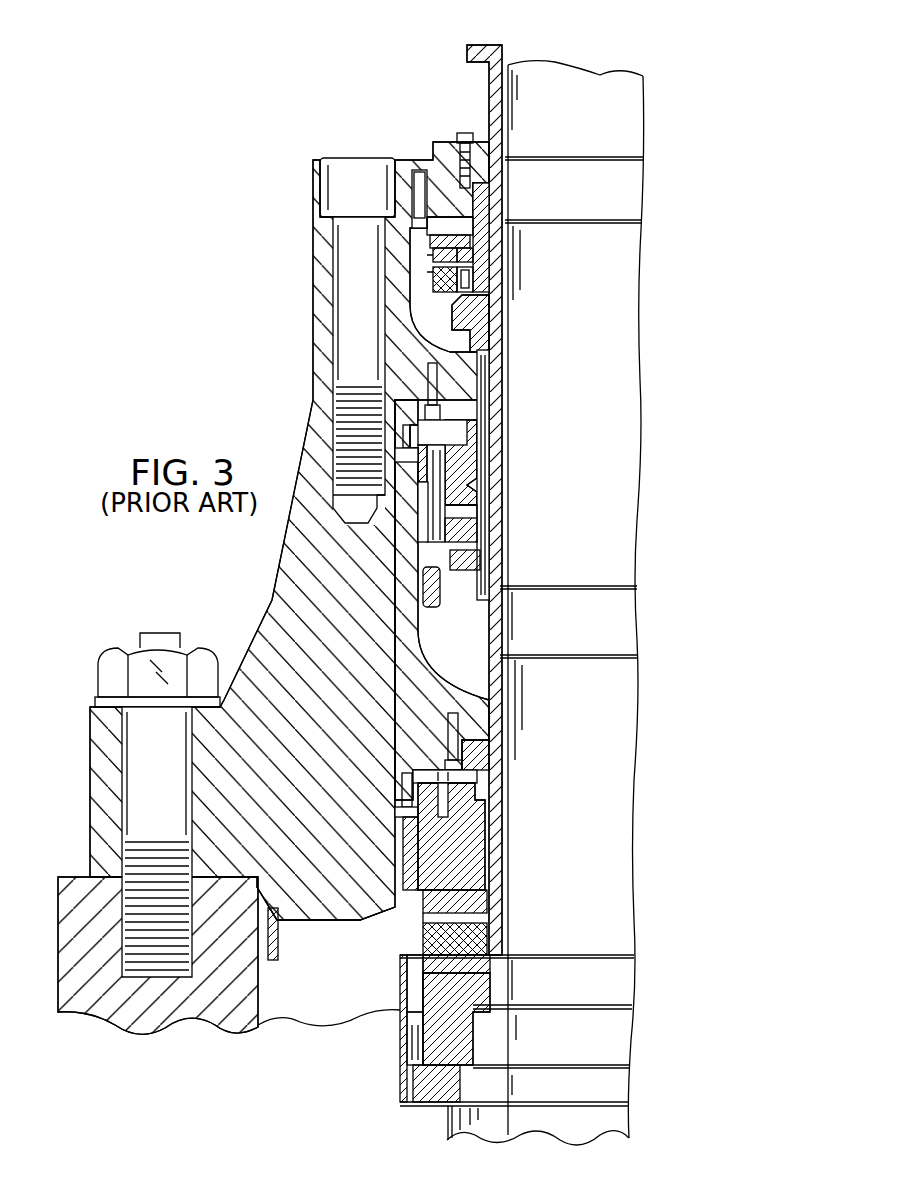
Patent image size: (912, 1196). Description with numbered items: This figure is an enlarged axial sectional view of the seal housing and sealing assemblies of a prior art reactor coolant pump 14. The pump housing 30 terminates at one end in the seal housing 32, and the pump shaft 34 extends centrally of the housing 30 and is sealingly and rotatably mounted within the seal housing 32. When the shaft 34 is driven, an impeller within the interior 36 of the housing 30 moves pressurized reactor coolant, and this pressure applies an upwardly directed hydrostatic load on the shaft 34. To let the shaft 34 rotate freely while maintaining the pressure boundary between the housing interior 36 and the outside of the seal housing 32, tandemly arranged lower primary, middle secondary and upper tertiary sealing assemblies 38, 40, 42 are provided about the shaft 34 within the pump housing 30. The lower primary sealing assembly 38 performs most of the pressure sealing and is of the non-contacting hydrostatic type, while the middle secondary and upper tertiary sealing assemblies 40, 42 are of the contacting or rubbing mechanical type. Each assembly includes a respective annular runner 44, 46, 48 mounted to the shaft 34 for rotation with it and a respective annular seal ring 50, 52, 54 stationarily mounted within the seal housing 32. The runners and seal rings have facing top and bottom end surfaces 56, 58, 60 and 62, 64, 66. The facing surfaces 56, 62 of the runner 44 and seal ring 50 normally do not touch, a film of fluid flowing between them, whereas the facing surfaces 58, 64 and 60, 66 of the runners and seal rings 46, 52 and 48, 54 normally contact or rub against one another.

The reactor coolant pump 14 is at (552, 573).
The pump housing 30 is at (216, 1033).
The seal housing 32 is at (275, 610).
The pump shaft 34 is at (622, 125).
The interior of the housing 36 is at (336, 1004).
The lower primary sealing assembly 38 is at (485, 907).
The middle secondary sealing assembly 40 is at (514, 475).
The upper tertiary sealing assembly 42 is at (532, 244).
The annular runner 44 is at (478, 945).
The annular runner 46 is at (472, 565).
The annular runner 48 is at (470, 323).
The annular seal ring 50 is at (478, 893).
The annular seal ring 52 is at (482, 520).
The annular seal ring 54 is at (440, 270).
The top end surface 56 is at (470, 898).
The top end surface 58 is at (462, 532).
The top end surface 60 is at (420, 262).
The bottom end surface 62 is at (460, 935).
The bottom end surface 64 is at (457, 550).
The bottom end surface 66 is at (470, 310).